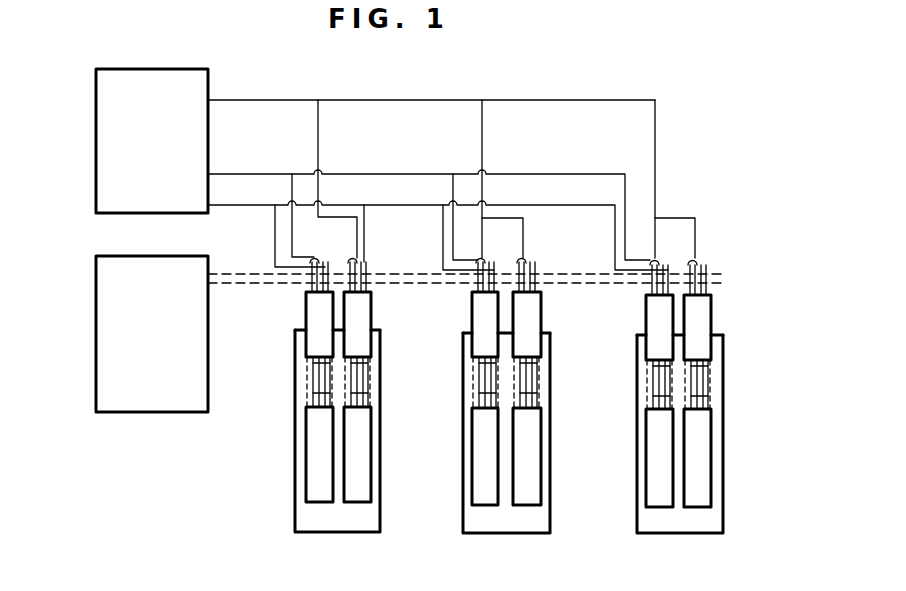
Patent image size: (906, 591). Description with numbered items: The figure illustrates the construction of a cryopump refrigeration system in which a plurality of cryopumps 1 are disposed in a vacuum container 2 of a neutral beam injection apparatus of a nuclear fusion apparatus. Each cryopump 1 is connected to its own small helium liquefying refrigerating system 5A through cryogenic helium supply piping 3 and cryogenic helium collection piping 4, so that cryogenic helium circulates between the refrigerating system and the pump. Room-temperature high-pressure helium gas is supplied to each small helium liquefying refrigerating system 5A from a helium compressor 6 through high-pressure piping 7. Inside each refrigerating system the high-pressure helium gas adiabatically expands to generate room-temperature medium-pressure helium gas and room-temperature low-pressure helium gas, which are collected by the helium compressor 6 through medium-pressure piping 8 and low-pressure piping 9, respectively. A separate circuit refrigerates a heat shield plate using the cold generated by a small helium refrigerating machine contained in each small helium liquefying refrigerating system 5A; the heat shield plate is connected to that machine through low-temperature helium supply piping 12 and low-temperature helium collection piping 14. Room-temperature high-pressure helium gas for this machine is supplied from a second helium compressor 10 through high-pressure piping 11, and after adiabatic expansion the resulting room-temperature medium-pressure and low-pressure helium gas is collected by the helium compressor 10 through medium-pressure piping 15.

The cryopump 1 is at (312, 460).
The vacuum container 2 is at (296, 504).
The cryogenic helium supply piping 3 is at (295, 342).
The cryogenic helium collection piping 4 is at (312, 394).
The small helium liquefying refrigerating system 5A is at (306, 301).
The helium compressor 6 is at (96, 125).
The high-pressure piping 7 is at (397, 100).
The medium-pressure piping 8 is at (388, 174).
The low-pressure piping 9 is at (274, 218).
The helium compressor 10 is at (96, 345).
The high-pressure piping 11 is at (254, 272).
The low-temperature helium supply piping 12 is at (298, 401).
The low-temperature helium collection piping 14 is at (314, 362).
The medium-pressure piping 15 is at (246, 285).